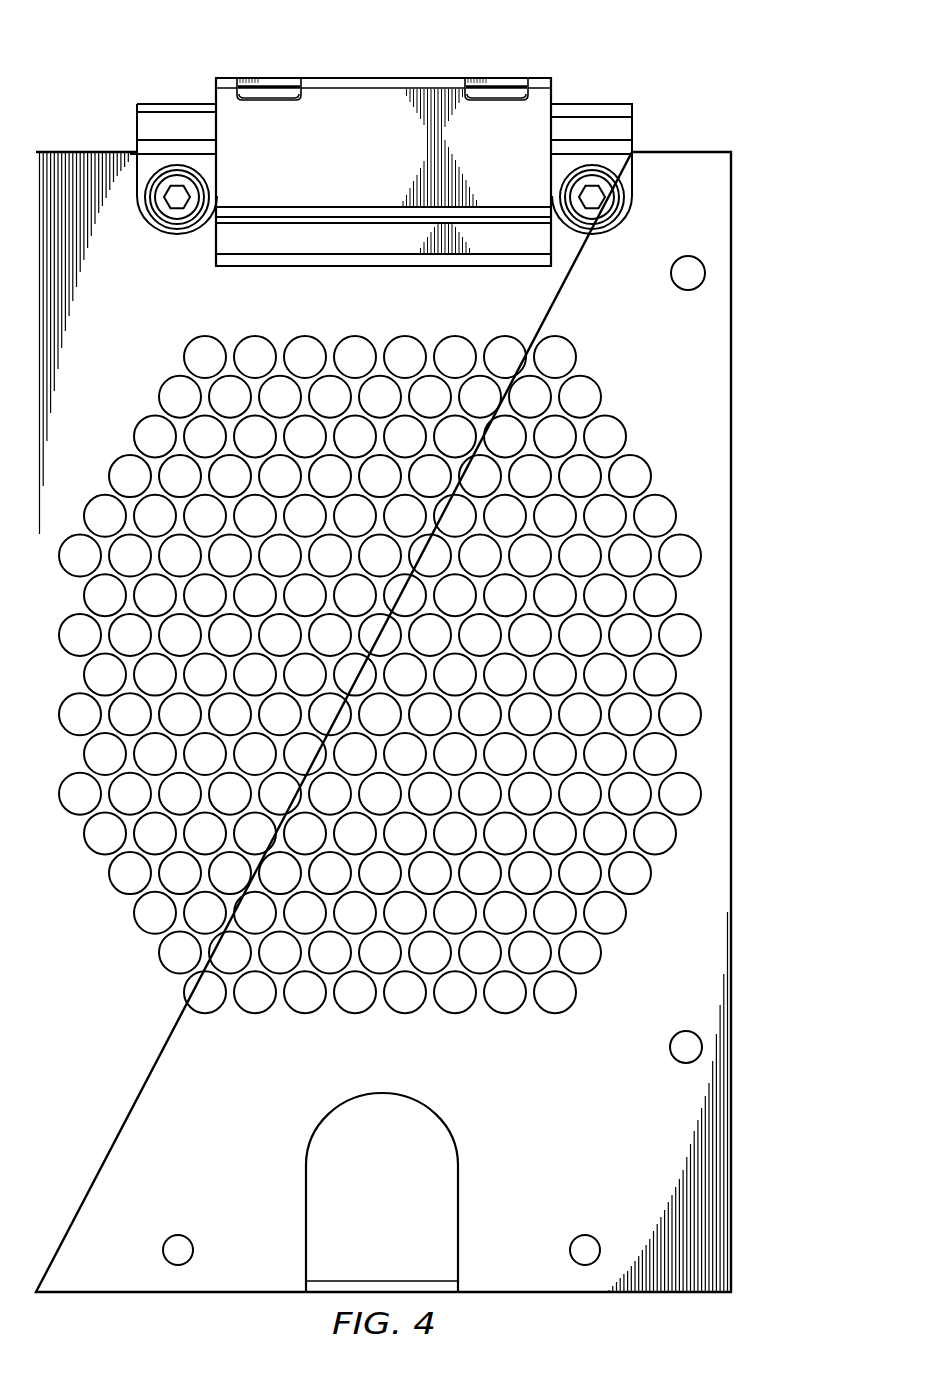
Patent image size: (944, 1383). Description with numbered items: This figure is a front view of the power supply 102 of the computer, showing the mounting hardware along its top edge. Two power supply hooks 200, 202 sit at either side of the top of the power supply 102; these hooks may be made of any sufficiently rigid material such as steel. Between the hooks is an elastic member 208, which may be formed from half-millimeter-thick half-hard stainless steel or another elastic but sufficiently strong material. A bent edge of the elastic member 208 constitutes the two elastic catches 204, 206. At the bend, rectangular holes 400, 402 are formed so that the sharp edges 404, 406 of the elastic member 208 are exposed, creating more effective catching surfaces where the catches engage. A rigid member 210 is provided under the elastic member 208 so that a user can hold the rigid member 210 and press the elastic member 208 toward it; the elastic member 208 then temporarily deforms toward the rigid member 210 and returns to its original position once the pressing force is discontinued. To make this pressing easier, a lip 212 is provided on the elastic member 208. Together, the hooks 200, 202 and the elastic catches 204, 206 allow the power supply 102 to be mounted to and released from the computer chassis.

The power supply 102 is at (734, 404).
The power supply hook 200 is at (590, 102).
The power supply hook 202 is at (177, 102).
The elastic catch 204 is at (528, 66).
The elastic catch 206 is at (246, 66).
The elastic member 208 is at (366, 161).
The rigid member 210 is at (380, 268).
The lip 212 is at (337, 205).
The rectangular hole 400 is at (501, 103).
The rectangular hole 402 is at (265, 101).
The sharp edge 404 is at (492, 77).
The sharp edge 406 is at (275, 77).